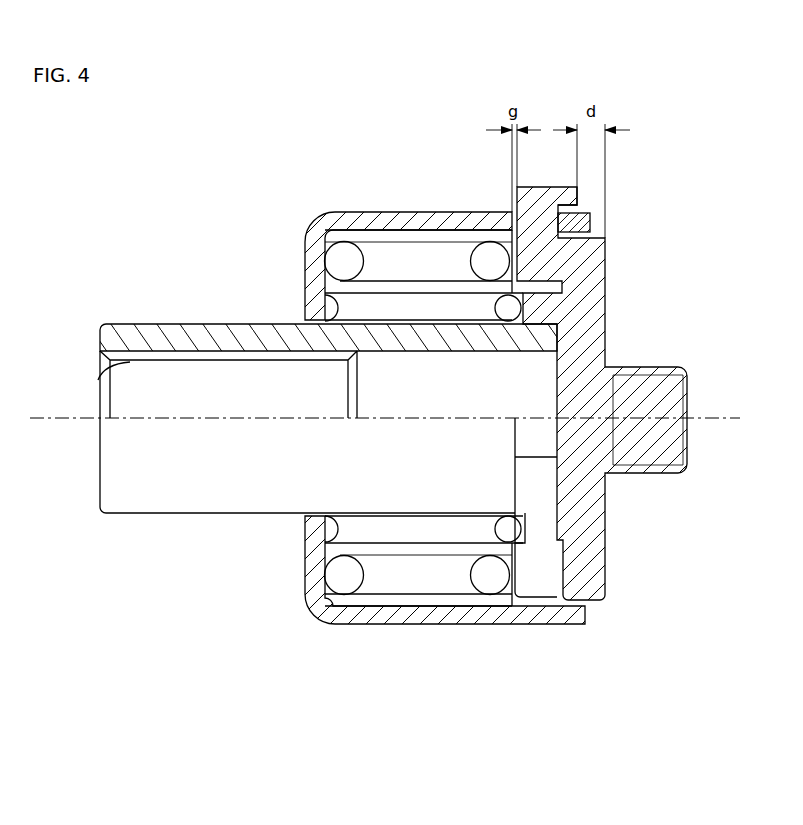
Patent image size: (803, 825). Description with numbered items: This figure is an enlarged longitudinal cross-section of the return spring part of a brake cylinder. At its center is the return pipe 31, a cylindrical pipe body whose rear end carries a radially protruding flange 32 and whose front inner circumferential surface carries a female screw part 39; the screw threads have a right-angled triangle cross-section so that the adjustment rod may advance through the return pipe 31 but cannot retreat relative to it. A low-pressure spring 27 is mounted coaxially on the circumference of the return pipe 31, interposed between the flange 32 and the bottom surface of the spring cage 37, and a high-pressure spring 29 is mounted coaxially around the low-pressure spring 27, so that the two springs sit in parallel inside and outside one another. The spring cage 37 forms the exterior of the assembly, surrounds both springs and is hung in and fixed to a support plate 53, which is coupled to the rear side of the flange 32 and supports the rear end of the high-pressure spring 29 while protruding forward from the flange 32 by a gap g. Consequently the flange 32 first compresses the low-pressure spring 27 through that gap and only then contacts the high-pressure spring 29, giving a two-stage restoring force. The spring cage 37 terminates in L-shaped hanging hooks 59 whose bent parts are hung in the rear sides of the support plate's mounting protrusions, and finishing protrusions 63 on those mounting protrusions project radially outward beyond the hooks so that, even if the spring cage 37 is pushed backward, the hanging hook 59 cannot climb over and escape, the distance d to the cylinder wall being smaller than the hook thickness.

The low-pressure spring 27 is at (383, 300).
The high-pressure spring 29 is at (427, 250).
The return pipe 31 is at (192, 516).
The flange 32 is at (538, 575).
The spring cage 37 is at (370, 628).
The female screw part 39 is at (98, 378).
The support plate 53 is at (597, 497).
The hanging hook 59 is at (590, 222).
The finishing protrusion 63 is at (577, 202).